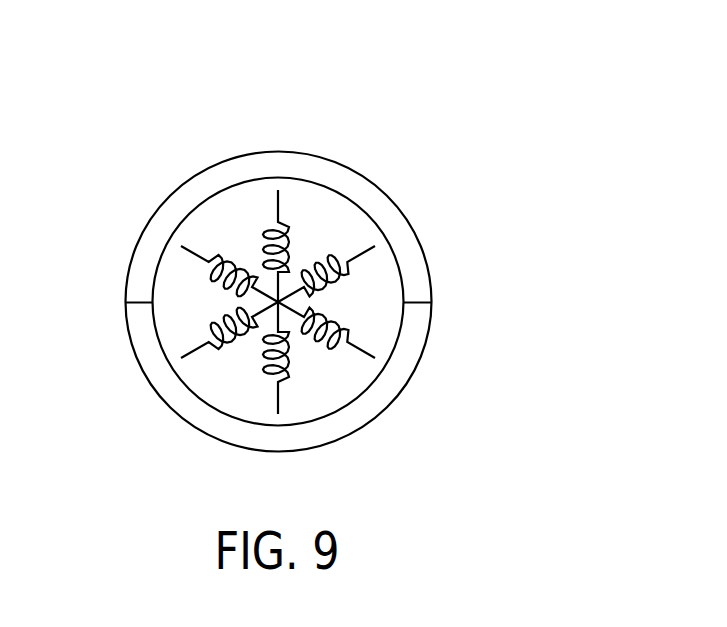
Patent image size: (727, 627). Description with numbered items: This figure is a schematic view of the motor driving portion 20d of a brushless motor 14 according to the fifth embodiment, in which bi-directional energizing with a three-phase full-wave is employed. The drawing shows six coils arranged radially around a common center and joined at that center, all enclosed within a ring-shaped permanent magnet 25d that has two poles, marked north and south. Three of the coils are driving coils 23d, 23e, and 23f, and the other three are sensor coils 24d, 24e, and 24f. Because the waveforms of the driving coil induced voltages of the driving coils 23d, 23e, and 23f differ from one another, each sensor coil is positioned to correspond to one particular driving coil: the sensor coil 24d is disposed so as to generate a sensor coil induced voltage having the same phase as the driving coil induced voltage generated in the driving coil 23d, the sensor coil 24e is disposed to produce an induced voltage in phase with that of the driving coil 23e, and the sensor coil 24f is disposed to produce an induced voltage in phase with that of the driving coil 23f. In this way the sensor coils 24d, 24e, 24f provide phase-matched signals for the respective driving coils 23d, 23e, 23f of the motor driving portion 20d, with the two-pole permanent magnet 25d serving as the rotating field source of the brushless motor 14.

The brushless motor 14 is at (438, 80).
The motor driving portion 20d is at (457, 110).
The driving coil 23d is at (345, 321).
The driving coil 23e is at (294, 236).
The driving coil 23f is at (214, 320).
The sensor coil 24d is at (229, 258).
The sensor coil 24e is at (297, 371).
The sensor coil 24f is at (336, 260).
The permanent magnet 25d is at (421, 271).